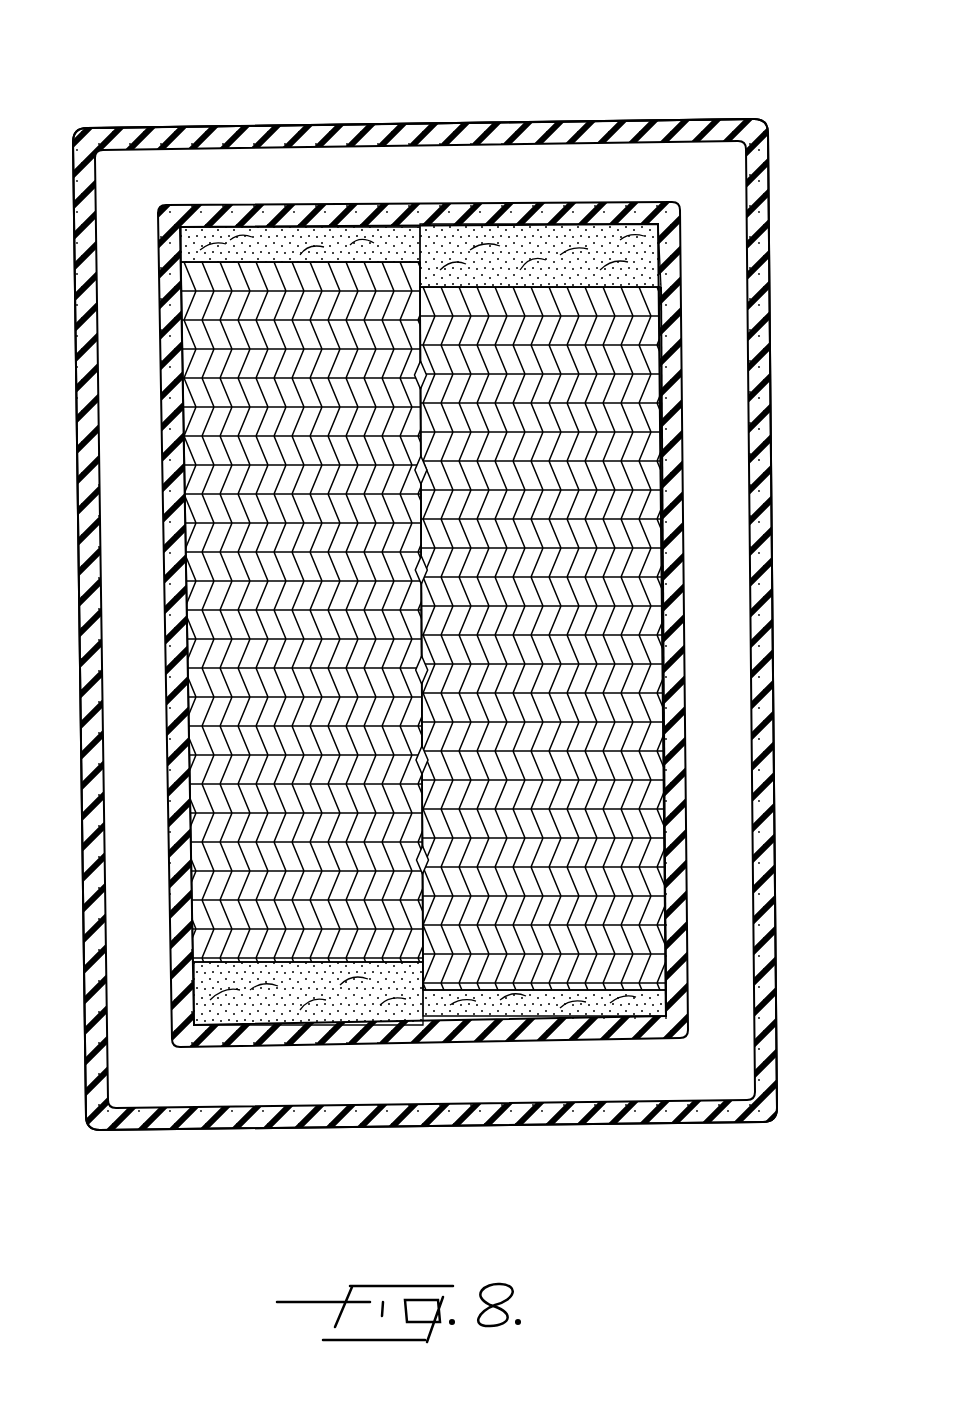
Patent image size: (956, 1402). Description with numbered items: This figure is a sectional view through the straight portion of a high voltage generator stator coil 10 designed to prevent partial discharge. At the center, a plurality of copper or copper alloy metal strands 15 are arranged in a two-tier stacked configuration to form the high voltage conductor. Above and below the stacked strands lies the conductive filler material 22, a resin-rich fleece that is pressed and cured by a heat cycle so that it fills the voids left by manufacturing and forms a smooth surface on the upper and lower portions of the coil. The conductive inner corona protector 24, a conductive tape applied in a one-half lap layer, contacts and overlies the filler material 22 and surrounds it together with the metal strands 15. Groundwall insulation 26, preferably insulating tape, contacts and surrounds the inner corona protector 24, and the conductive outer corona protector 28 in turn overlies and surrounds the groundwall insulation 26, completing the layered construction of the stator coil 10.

The high voltage generator stator coil 10 is at (377, 95).
The metal strands 15 is at (655, 535).
The conductive filler material 22 is at (665, 209).
The conductive inner corona protector 24 is at (677, 260).
The groundwall insulation 26 is at (118, 168).
The conductive outer corona protector 28 is at (572, 118).